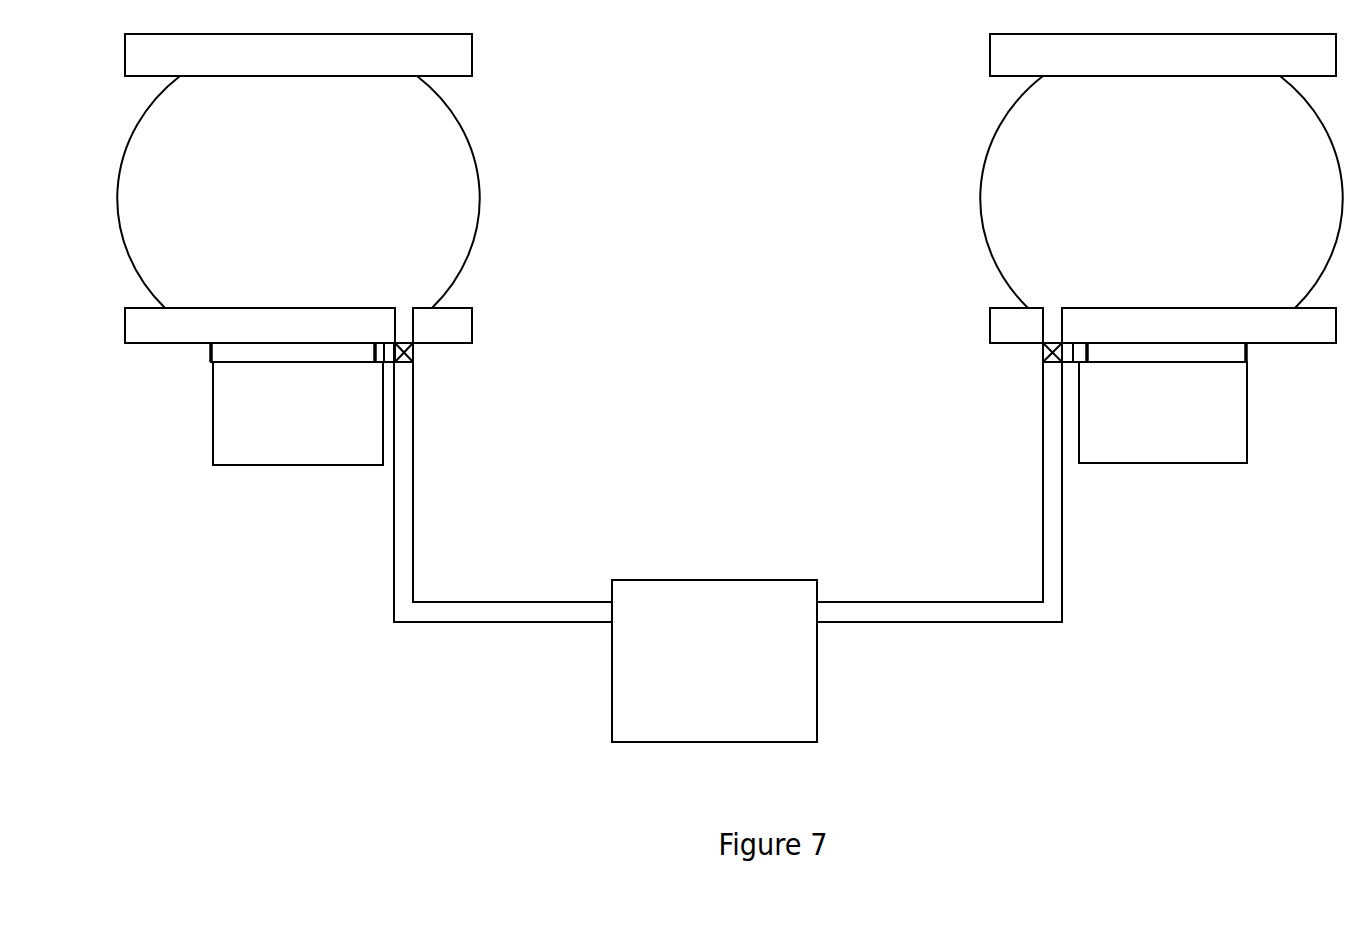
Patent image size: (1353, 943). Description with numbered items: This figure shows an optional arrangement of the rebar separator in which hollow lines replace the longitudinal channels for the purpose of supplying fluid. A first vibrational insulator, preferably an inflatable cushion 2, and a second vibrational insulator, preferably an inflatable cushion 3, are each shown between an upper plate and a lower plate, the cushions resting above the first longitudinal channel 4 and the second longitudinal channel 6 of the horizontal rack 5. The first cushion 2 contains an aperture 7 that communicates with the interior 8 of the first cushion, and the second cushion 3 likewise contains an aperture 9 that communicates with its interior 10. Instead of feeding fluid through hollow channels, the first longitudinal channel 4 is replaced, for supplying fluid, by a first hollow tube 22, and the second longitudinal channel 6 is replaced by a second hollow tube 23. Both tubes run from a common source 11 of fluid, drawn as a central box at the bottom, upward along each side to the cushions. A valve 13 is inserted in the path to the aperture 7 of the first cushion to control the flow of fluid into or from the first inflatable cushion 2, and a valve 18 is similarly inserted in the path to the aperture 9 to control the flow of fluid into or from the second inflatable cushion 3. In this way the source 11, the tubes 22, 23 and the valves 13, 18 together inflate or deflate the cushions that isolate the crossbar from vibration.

The first inflatable cushion 2 is at (420, 173).
The second inflatable cushion 3 is at (1053, 157).
The first longitudinal channel 4 is at (348, 419).
The horizontal rack 5 is at (270, 465).
The second longitudinal channel 6 is at (1097, 413).
The aperture 7 is at (405, 322).
The interior 8 is at (387, 238).
The aperture 9 is at (1050, 317).
The interior 10 is at (1057, 232).
The source of fluid 11 is at (687, 607).
The valve 13 is at (413, 352).
The valve 18 is at (1043, 351).
The first hollow tube 22 is at (458, 613).
The second hollow tube 23 is at (978, 612).